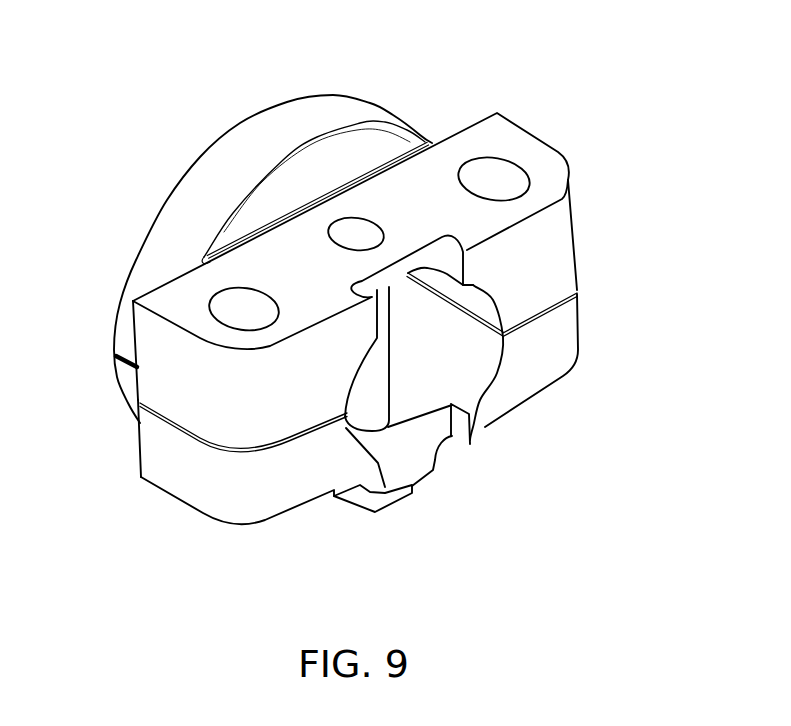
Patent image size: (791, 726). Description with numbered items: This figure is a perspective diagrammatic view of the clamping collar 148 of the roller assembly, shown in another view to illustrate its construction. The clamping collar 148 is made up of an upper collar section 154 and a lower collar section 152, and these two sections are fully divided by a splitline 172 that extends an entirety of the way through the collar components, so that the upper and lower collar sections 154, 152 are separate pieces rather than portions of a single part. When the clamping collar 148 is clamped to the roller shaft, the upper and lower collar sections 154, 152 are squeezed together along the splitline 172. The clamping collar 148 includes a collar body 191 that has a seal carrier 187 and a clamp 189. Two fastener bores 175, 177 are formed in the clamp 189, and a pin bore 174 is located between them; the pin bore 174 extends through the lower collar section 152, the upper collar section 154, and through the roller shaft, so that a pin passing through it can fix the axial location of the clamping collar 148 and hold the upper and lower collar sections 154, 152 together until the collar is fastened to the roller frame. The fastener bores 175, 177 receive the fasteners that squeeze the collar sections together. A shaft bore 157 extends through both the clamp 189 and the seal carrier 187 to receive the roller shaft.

The clamping collar 148 is at (646, 151).
The lower collar section 152 is at (555, 350).
The upper collar section 154 is at (555, 211).
The shaft bore 157 is at (481, 405).
The splitline 172 is at (577, 283).
The pin bore 174 is at (348, 222).
The fastener bore 175 is at (215, 300).
The fastener bore 177 is at (478, 162).
The seal carrier 187 is at (377, 103).
The clamp 189 is at (244, 526).
The collar body 191 is at (575, 234).